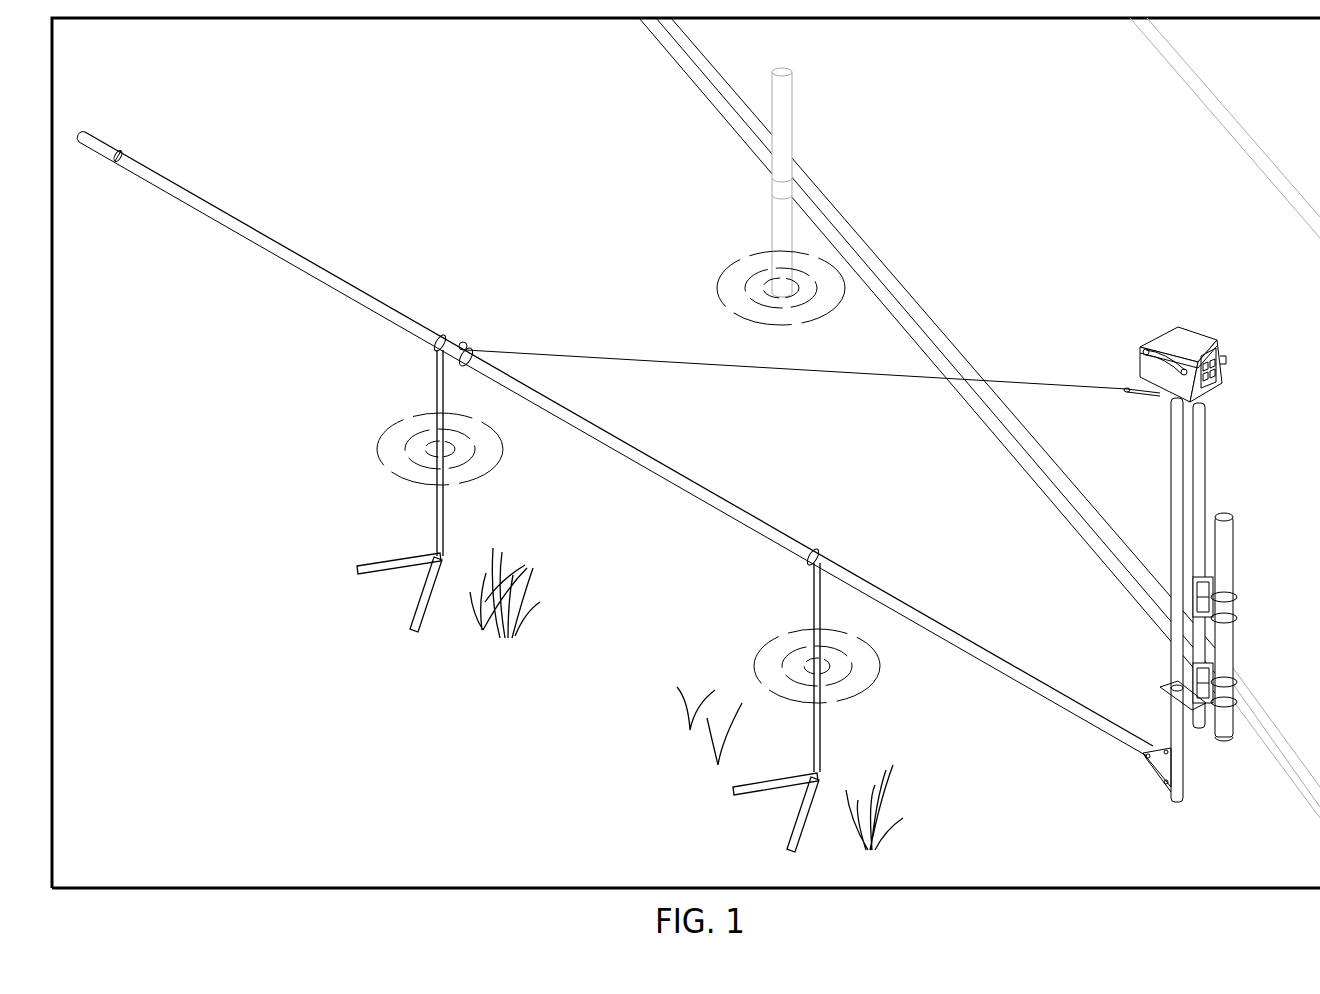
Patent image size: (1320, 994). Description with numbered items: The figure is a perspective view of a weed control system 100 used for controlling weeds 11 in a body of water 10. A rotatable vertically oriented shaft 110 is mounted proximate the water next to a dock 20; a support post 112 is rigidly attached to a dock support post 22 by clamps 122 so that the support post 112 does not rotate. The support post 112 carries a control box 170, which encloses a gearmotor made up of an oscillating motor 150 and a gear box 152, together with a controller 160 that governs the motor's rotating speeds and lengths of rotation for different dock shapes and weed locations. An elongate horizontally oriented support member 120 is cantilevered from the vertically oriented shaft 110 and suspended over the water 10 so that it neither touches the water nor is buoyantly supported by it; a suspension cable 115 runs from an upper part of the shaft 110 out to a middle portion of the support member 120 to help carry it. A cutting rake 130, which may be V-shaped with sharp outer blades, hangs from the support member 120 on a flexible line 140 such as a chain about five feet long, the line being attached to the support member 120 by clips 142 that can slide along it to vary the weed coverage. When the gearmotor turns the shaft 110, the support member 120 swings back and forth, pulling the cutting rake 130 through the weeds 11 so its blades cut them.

The body of water 10 is at (286, 726).
The weeds 11 is at (530, 568).
The dock 20 is at (1078, 466).
The dock support post 22 is at (1234, 648).
The weed control system 100 is at (1171, 527).
The vertically oriented shaft 110 is at (1171, 496).
The support post 112 is at (1207, 490).
The suspension cable 115 is at (798, 372).
The horizontally oriented support member 120 is at (648, 458).
The clamps 122 is at (1236, 596).
The cutting rake 130 is at (399, 562).
The flexible line 140 is at (447, 514).
The clips 142 is at (444, 340).
The oscillating motor 150 is at (1216, 386).
The gear box 152 is at (1225, 372).
The controller 160 is at (1212, 358).
The control box 170 is at (1166, 343).